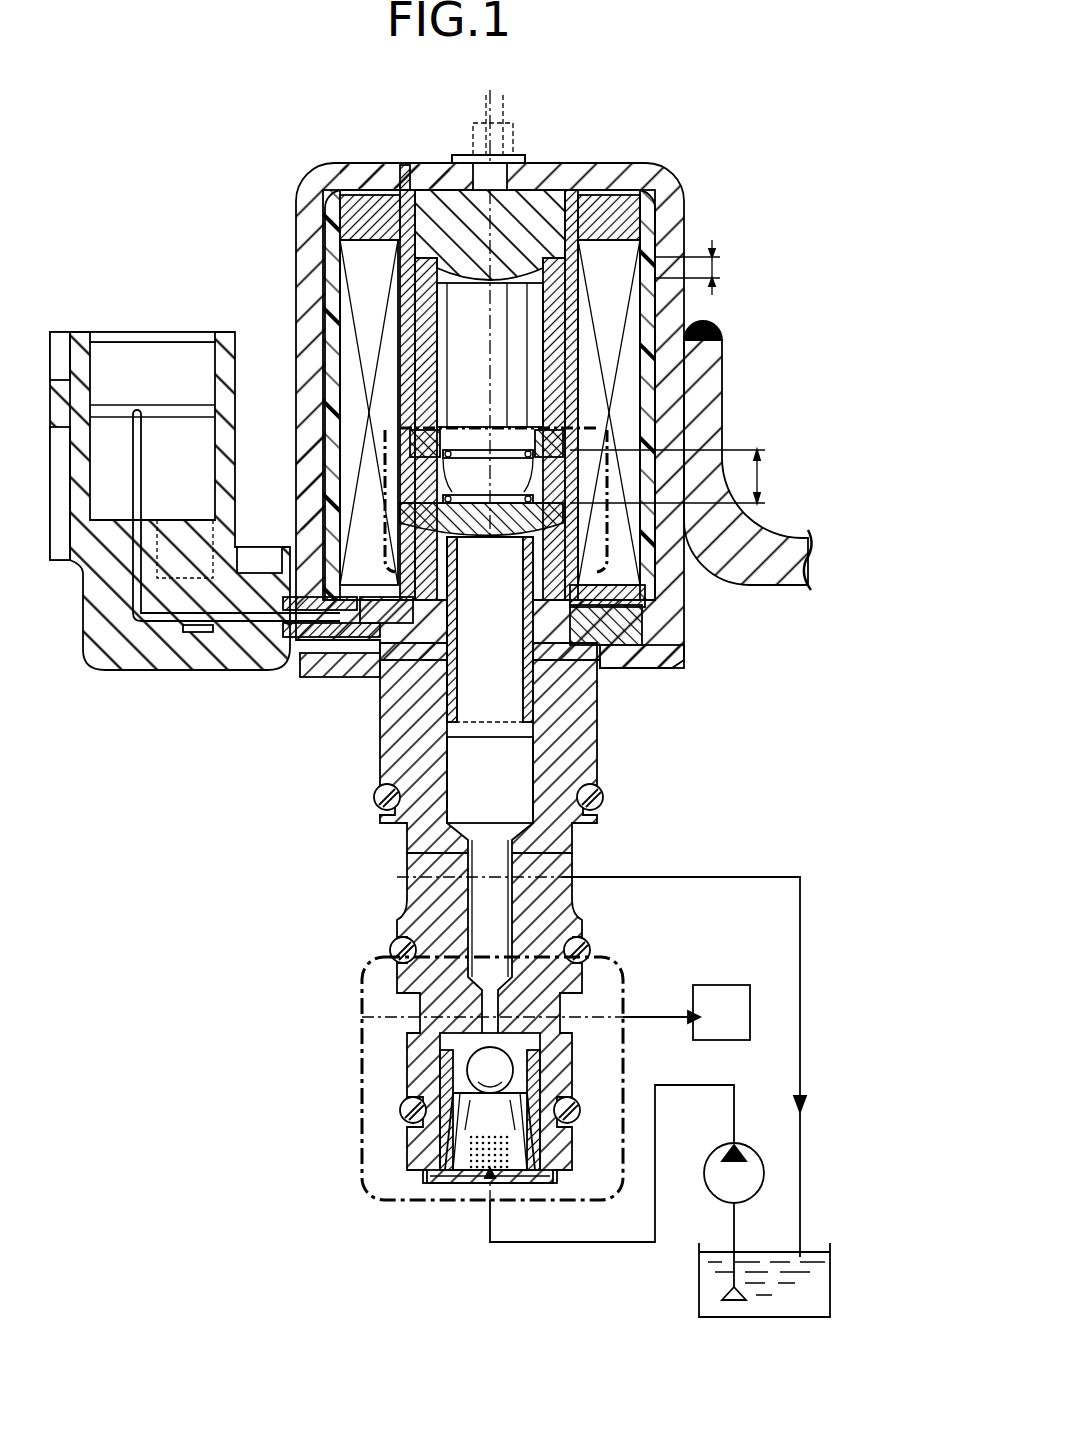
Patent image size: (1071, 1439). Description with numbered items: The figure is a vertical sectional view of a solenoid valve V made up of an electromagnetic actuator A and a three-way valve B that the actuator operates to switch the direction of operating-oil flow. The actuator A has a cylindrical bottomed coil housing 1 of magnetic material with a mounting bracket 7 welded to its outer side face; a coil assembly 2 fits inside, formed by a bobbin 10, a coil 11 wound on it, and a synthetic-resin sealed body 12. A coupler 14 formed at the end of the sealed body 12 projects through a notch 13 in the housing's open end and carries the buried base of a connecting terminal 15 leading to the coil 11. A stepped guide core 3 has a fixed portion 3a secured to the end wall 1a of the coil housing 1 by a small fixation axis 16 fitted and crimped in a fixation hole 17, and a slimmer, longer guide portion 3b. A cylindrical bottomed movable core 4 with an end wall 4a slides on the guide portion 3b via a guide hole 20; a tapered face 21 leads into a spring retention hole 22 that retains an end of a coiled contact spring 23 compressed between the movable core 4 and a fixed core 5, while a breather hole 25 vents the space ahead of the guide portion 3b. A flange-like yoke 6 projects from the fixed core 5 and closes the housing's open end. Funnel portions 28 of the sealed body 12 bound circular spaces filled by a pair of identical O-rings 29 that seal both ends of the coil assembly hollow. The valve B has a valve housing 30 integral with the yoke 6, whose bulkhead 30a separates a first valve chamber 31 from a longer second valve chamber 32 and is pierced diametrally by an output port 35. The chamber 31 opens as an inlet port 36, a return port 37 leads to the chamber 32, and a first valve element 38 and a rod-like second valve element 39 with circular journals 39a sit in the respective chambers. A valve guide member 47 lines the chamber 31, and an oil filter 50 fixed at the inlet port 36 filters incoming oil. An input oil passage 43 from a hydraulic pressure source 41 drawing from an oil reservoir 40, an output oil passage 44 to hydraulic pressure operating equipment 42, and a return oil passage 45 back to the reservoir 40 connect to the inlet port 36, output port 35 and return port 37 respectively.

The coil housing 1 is at (298, 272).
The end wall 1a is at (378, 166).
The coil assembly 2 is at (330, 300).
The guide core 3 is at (540, 170).
The fixed portion 3a is at (518, 215).
The guide portion 3b is at (490, 429).
The movable core 4 is at (575, 356).
The end wall 4a is at (470, 540).
The fixed core 5 is at (565, 555).
The yoke 6 is at (660, 667).
The mounting bracket 7 is at (765, 578).
The bobbin 10 is at (394, 292).
The coil 11 is at (342, 362).
The sealed body 12 is at (325, 485).
The notch 13 is at (300, 568).
The coupler 14 is at (80, 345).
The connecting terminal 15 is at (141, 428).
The small fixation axis 16 is at (505, 150).
The fixation hole 17 is at (480, 158).
The guide hole 20 is at (440, 298).
The tapered face 21 is at (458, 458).
The spring retention hole 22 is at (516, 458).
The contact spring 23 is at (458, 492).
The breather hole 25 is at (392, 440).
The funnel portion 28 is at (405, 166).
The O-ring 29 is at (585, 195).
The valve housing 30 is at (405, 918).
The bulkhead 30a is at (460, 992).
The first valve chamber 31 is at (538, 1118).
The second valve chamber 32 is at (530, 745).
The output port 35 is at (560, 1030).
The inlet port 36 is at (520, 1180).
The return port 37 is at (570, 885).
The first valve element 38 is at (478, 1073).
The second valve element 39 is at (455, 778).
The circular journal 39a is at (600, 622).
The oil reservoir 40 is at (700, 1282).
The hydraulic pressure source 41 is at (722, 1170).
The hydraulic pressure operating equipment 42 is at (721, 1012).
The input oil passage 43 is at (578, 1245).
The output oil passage 44 is at (645, 1015).
The return oil passage 45 is at (802, 955).
The valve guide member 47 is at (412, 1110).
The oil filter 50 is at (480, 1172).
The solenoid valve V is at (688, 166).
The electromagnetic actuator A is at (725, 215).
The three-way valve B is at (690, 783).